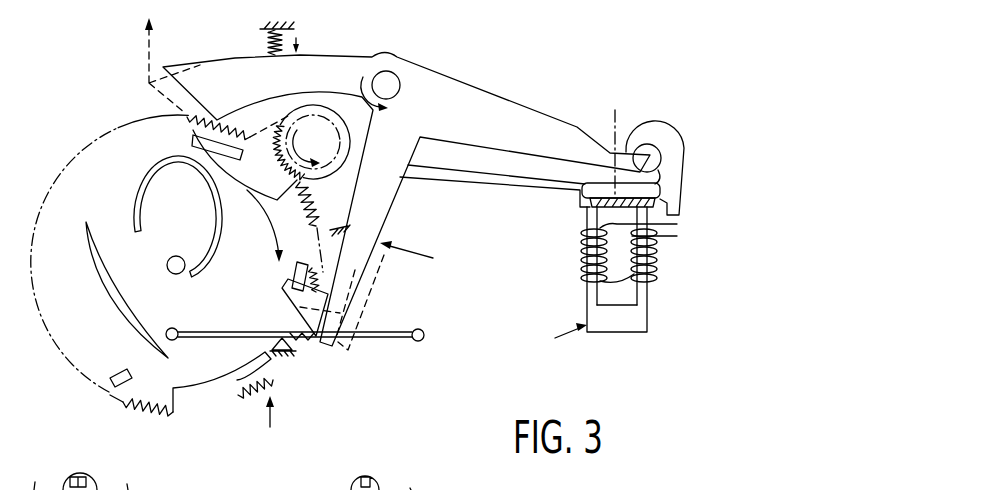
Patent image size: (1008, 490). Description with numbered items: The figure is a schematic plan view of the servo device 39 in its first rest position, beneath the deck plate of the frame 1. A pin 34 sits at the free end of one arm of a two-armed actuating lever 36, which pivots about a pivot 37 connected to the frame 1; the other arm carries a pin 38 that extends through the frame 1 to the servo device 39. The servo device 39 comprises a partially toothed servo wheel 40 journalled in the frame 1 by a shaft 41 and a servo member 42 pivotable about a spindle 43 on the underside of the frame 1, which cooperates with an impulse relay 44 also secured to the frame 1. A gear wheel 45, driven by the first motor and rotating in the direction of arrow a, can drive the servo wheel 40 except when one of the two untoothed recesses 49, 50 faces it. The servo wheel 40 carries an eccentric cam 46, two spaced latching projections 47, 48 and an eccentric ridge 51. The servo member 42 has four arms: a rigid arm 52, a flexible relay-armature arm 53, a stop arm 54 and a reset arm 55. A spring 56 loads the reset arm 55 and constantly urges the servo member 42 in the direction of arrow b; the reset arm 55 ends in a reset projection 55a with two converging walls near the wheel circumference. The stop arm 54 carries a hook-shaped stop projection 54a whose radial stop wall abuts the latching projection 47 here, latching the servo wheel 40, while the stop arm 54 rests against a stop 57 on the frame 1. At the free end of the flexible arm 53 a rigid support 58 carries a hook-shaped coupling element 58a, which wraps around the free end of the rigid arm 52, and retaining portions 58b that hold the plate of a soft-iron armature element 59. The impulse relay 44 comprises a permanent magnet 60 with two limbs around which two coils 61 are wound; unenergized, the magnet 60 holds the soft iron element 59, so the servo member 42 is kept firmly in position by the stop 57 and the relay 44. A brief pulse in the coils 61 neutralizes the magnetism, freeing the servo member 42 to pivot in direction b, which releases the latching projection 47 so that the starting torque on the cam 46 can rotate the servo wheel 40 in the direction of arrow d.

The frame 1 is at (268, 25).
The pin 34 is at (417, 328).
The actuating lever 36 is at (393, 339).
The pivot 37 is at (293, 351).
The pin 38 is at (171, 327).
The servo device 39 is at (286, 455).
The servo wheel 40 is at (155, 390).
The shaft 41 is at (176, 256).
The servo member 42 is at (399, 295).
The spindle 43 is at (397, 80).
The impulse relay 44 is at (585, 280).
The gear wheel 45 is at (328, 107).
The cam 46 is at (148, 156).
The latching projection 47 is at (304, 256).
The latching projection 48 is at (119, 374).
The recess 49 is at (260, 168).
The recess 50 is at (210, 393).
The ridge 51 is at (108, 293).
The rigid arm 52 is at (573, 136).
The flexible relay-armature arm 53 is at (473, 179).
The stop arm 54 is at (387, 198).
The stop projection 54a is at (283, 300).
The reset arm 55 is at (297, 70).
The reset projection 55a is at (218, 110).
The spring 56 is at (266, 40).
The stop 57 is at (343, 224).
The rigid support 58 is at (652, 183).
The coupling element 58a is at (673, 139).
The retaining portions 58b is at (673, 208).
The soft-iron armature element 59 is at (621, 146).
The permanent magnet 60 is at (615, 320).
The coils 61 is at (580, 263).
The arrow a is at (306, 140).
The arrow b is at (368, 82).
The arrow d is at (264, 220).